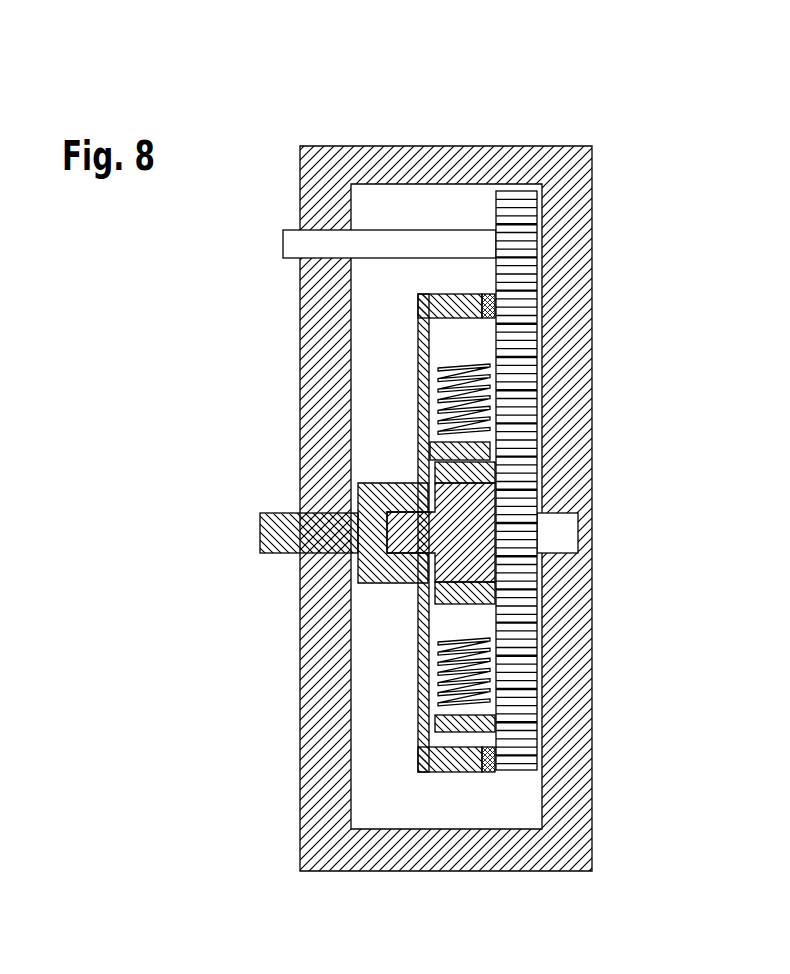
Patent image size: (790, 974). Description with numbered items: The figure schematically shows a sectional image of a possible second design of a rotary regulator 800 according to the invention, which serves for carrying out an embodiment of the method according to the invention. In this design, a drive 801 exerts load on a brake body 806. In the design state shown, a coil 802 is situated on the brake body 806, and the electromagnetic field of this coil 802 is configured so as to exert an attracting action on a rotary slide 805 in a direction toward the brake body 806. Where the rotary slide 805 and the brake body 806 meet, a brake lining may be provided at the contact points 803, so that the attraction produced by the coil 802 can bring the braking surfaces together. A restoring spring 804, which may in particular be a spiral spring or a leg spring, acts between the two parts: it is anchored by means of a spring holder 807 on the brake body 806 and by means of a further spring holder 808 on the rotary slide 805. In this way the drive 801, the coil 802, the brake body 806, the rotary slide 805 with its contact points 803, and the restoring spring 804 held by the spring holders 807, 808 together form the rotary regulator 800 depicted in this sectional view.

The rotary regulator 800 is at (357, 112).
The drive 801 is at (515, 213).
The coil 802 is at (437, 474).
The contact points 803 is at (490, 309).
The restoring spring 804 is at (490, 424).
The rotary slide 805 is at (278, 537).
The brake body 806 is at (565, 533).
The spring holder 807 is at (437, 725).
The spring holder 808 is at (440, 452).